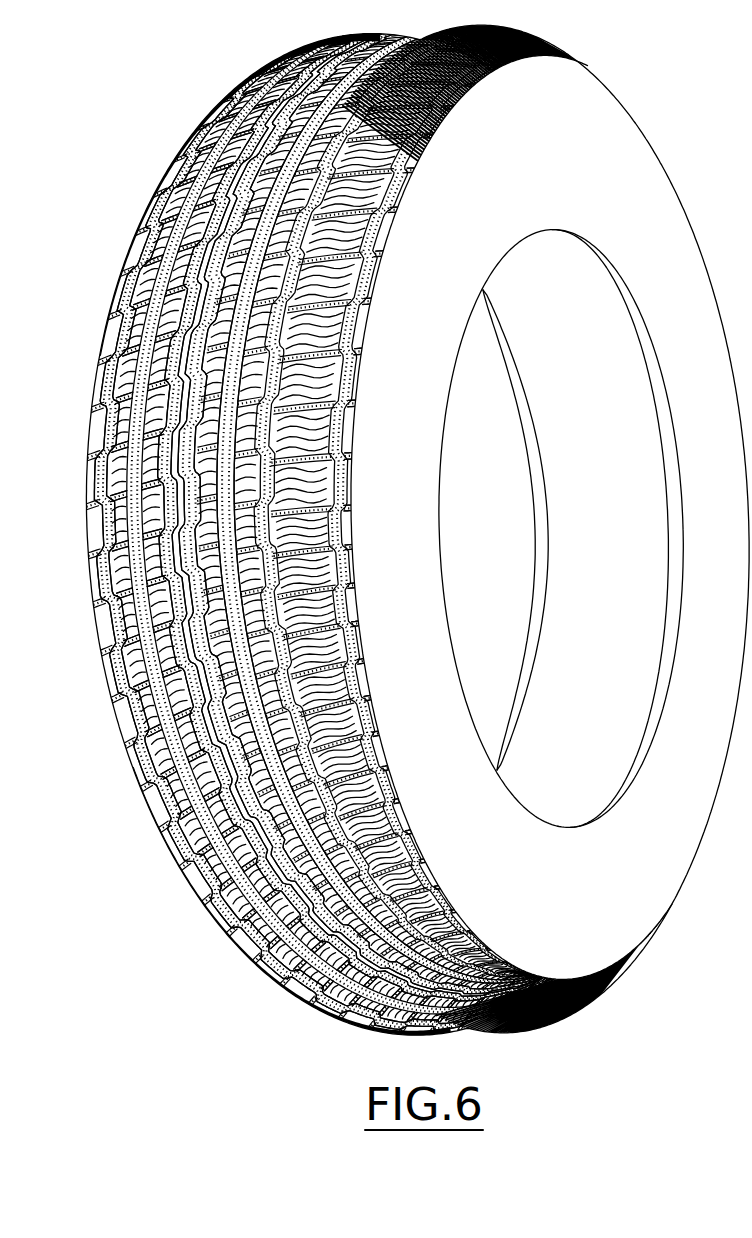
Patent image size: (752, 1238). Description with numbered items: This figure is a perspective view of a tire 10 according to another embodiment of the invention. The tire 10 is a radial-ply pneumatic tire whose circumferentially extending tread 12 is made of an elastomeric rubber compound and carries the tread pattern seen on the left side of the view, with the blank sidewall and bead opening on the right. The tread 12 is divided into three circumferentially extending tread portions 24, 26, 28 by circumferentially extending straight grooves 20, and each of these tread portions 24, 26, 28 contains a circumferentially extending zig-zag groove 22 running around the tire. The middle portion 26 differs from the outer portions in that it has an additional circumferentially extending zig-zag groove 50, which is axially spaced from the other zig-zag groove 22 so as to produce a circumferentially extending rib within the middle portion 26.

The tire 10 is at (630, 64).
The tread portion 12 is at (193, 128).
The circumferentially extending straight grooves 20 is at (163, 853).
The circumferentially extending zig-zag groove 22 is at (105, 647).
The tread portion 24 is at (86, 548).
The middle tread portion 26 is at (148, 592).
The tread portion 28 is at (225, 697).
The additional circumferentially extending zig-zag groove 50 is at (163, 428).